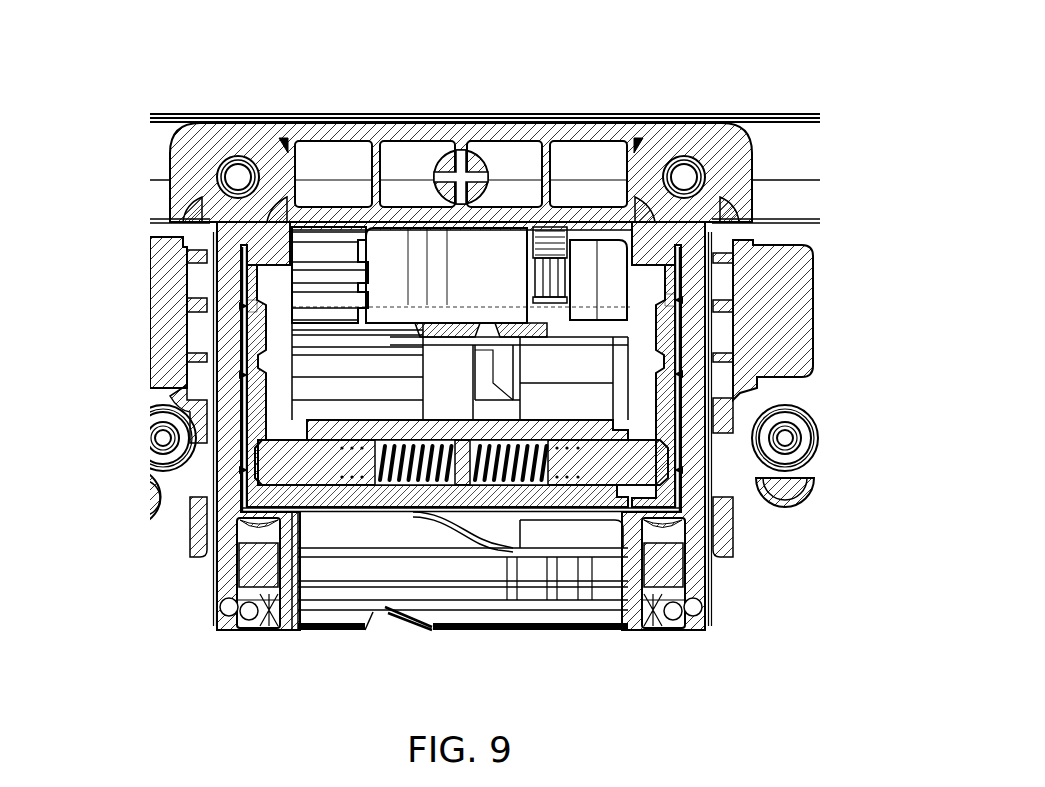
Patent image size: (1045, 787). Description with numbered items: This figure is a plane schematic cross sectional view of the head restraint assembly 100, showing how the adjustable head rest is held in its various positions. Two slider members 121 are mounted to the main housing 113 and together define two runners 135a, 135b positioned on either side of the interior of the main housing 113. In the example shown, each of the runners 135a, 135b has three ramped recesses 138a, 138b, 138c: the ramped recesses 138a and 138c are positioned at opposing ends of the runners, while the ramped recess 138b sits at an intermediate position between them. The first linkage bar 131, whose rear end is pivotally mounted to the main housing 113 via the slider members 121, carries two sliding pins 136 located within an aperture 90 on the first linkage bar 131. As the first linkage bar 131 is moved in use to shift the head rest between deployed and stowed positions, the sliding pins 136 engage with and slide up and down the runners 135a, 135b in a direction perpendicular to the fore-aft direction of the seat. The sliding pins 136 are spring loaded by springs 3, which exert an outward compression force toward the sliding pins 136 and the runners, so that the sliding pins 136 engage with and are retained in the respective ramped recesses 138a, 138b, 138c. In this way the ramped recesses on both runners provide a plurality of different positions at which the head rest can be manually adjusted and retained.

The head restraint assembly 100 is at (148, 66).
The main housing 113 is at (714, 573).
The slider members 121 is at (250, 258).
The runner 135a is at (245, 297).
The runner 135b is at (708, 282).
The ramped recess 138a is at (238, 308).
The ramped recess 138b is at (238, 377).
The ramped recess 138c is at (238, 472).
The sliding pins 136 is at (640, 470).
The first linkage bar 131 is at (548, 497).
The aperture 90 is at (393, 472).
The springs 3 is at (408, 474).